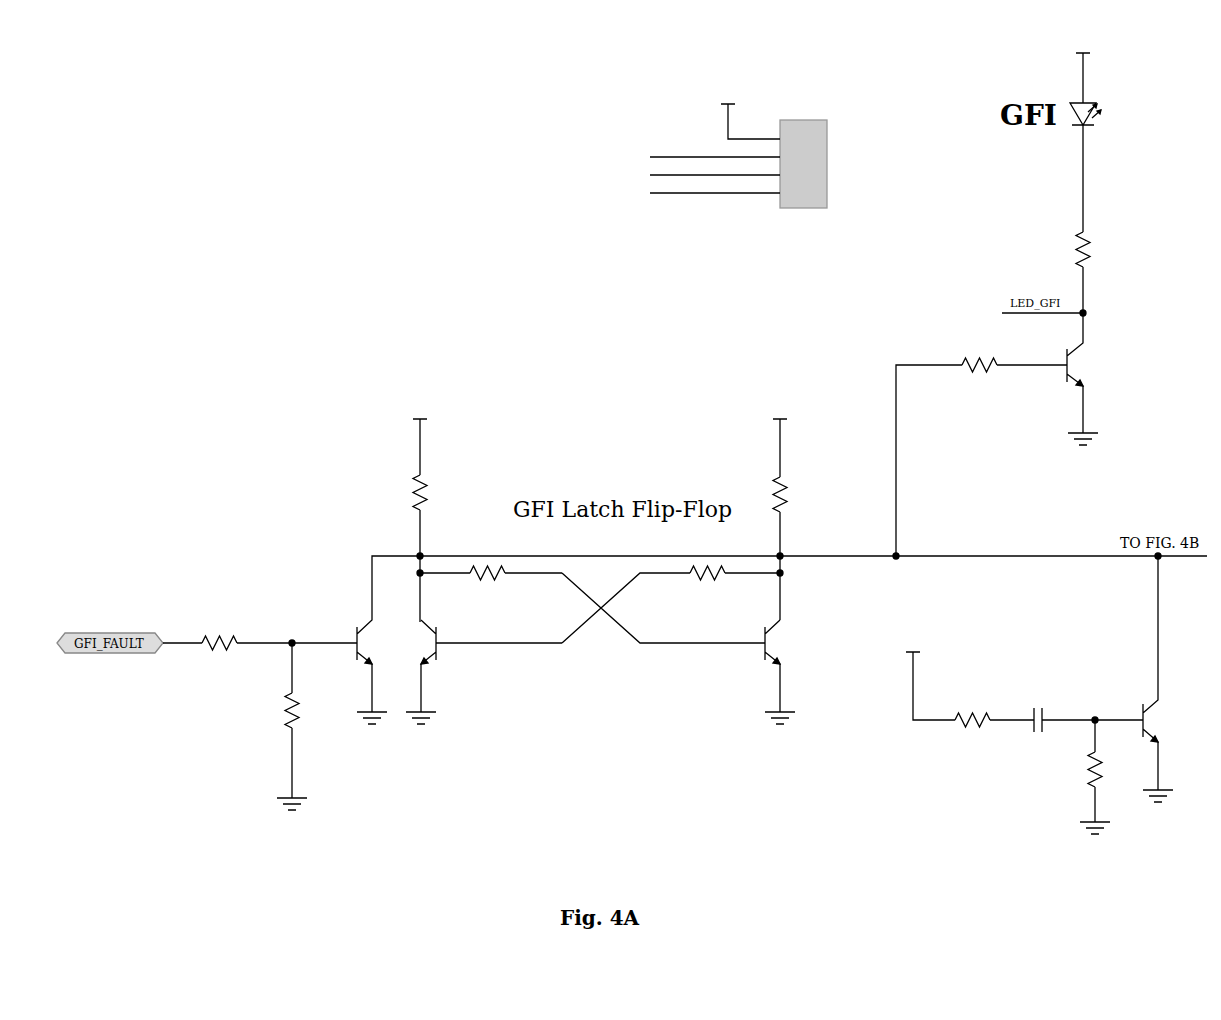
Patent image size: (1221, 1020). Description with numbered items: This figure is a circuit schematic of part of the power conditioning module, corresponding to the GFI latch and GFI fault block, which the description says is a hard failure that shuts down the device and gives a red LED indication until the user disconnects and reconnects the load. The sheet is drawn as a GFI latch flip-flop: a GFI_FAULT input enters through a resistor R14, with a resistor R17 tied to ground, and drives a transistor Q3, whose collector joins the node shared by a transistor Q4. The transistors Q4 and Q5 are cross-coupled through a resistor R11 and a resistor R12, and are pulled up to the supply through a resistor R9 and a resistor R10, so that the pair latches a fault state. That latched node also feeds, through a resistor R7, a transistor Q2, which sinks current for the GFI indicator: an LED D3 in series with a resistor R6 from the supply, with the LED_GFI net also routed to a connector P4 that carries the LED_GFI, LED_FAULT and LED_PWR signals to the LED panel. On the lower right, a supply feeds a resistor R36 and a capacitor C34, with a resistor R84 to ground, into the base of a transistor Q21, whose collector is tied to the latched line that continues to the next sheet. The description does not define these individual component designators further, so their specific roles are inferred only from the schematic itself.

The resistor R14 (4.7K, GFI_FAULT input) R14 is at (217, 646).
The resistor R17 (4.7K pull-down) R17 is at (307, 735).
The transistor Q3 (BC846) Q3 is at (372, 649).
The transistor Q4 (BC846, latch) Q4 is at (484, 674).
The transistor Q5 (BC846, latch) Q5 is at (789, 681).
The resistor R9 (4.7K pull-up) R9 is at (435, 512).
The resistor R10 (4.7K pull-up) R10 is at (795, 511).
The resistor R11 (47K cross-coupling) R11 is at (491, 576).
The resistor R12 (47K cross-coupling) R12 is at (734, 576).
The resistor R7 (4.7K base resistor) R7 is at (981, 447).
The transistor Q2 (BC846, LED driver) Q2 is at (1091, 388).
The resistor R6 (1K LED series) R6 is at (1098, 219).
The LED D3 (GFI indicator) D3 is at (1104, 97).
The connector P4 (MHDR1X4) P4 is at (738, 154).
The resistor R36 (2.2K) R36 is at (965, 695).
The capacitor C34 (0.1uF) C34 is at (1061, 725).
The resistor R84 (1K) R84 is at (1106, 786).
The transistor Q21 (BC846) Q21 is at (1143, 688).